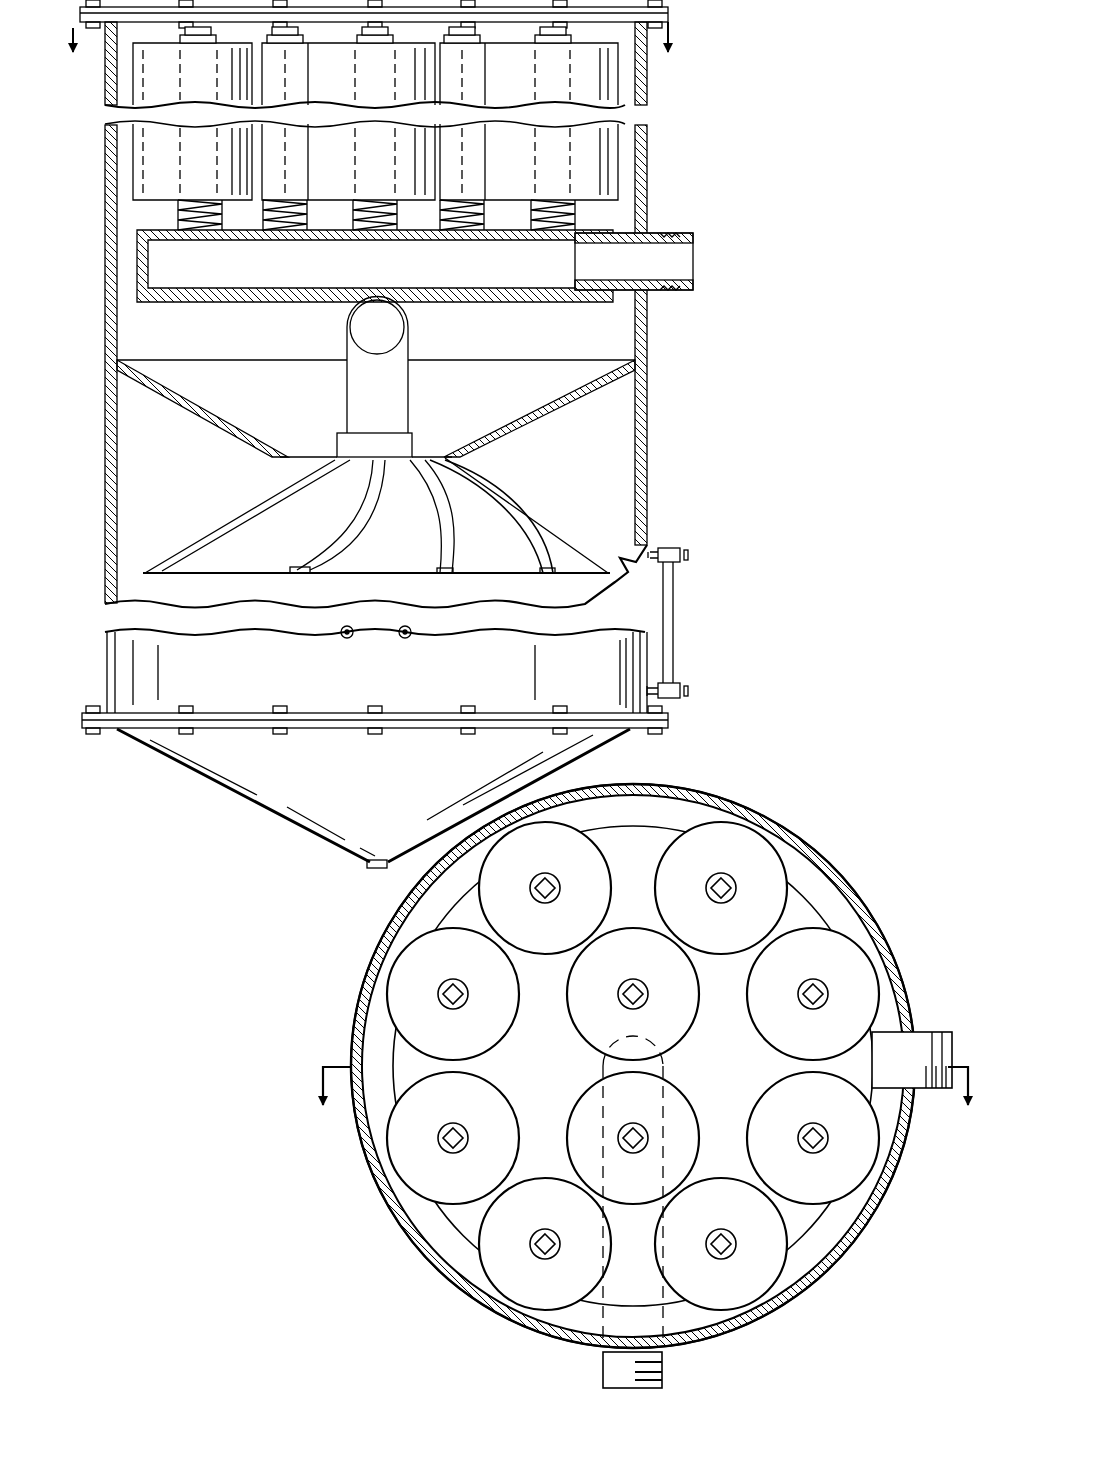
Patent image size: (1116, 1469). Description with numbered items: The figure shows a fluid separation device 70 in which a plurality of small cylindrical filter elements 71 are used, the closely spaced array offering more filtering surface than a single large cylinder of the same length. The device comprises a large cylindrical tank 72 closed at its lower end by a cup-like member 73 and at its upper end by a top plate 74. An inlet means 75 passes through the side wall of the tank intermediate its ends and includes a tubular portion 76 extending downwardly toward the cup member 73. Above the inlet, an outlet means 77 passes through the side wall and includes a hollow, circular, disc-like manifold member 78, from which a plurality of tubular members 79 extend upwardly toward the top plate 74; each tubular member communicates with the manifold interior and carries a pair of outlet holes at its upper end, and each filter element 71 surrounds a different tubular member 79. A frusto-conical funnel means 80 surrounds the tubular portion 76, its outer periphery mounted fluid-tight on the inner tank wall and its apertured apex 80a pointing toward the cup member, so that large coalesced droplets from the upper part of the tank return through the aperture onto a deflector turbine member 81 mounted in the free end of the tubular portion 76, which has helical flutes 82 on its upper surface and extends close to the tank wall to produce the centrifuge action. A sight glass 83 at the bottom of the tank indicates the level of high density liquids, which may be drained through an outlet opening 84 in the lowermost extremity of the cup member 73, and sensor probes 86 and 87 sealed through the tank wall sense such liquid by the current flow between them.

In FIG. 7, the device 70 is at (708, 117).
In FIG. 8, the device 70 is at (846, 843).
In FIG. 7, the filter elements 71 is at (145, 90).
In FIG. 8, the filter elements 71 is at (542, 1205).
In FIG. 7, the cylindrical tank 72 is at (650, 340).
In FIG. 8, the cylindrical tank 72 is at (362, 998).
In FIG. 7, the cup-like member 73 is at (295, 790).
In FIG. 7, the top plate 74 is at (672, 7).
In FIG. 7, the inlet means 75 is at (360, 327).
In FIG. 8, the inlet means 75 is at (662, 1370).
In FIG. 7, the tubular portion 76 is at (390, 402).
In FIG. 7, the outlet means 77 is at (692, 234).
In FIG. 8, the outlet means 77 is at (918, 1032).
In FIG. 7, the manifold member 78 is at (372, 277).
In FIG. 8, the manifold member 78 is at (665, 822).
In FIG. 7, the tubular members 79 is at (189, 160).
In FIG. 7, the frusto-conical funnel means 80 is at (482, 412).
In FIG. 7, the apertured apex 80a is at (445, 462).
In FIG. 7, the deflector turbine member 81 is at (480, 530).
In FIG. 7, the helical flutes 82 is at (540, 545).
In FIG. 7, the sight glass 83 is at (675, 612).
In FIG. 7, the outlet opening 84 is at (365, 868).
In FIG. 7, the sensor probe 86 is at (350, 640).
In FIG. 7, the sensor probe 87 is at (408, 640).